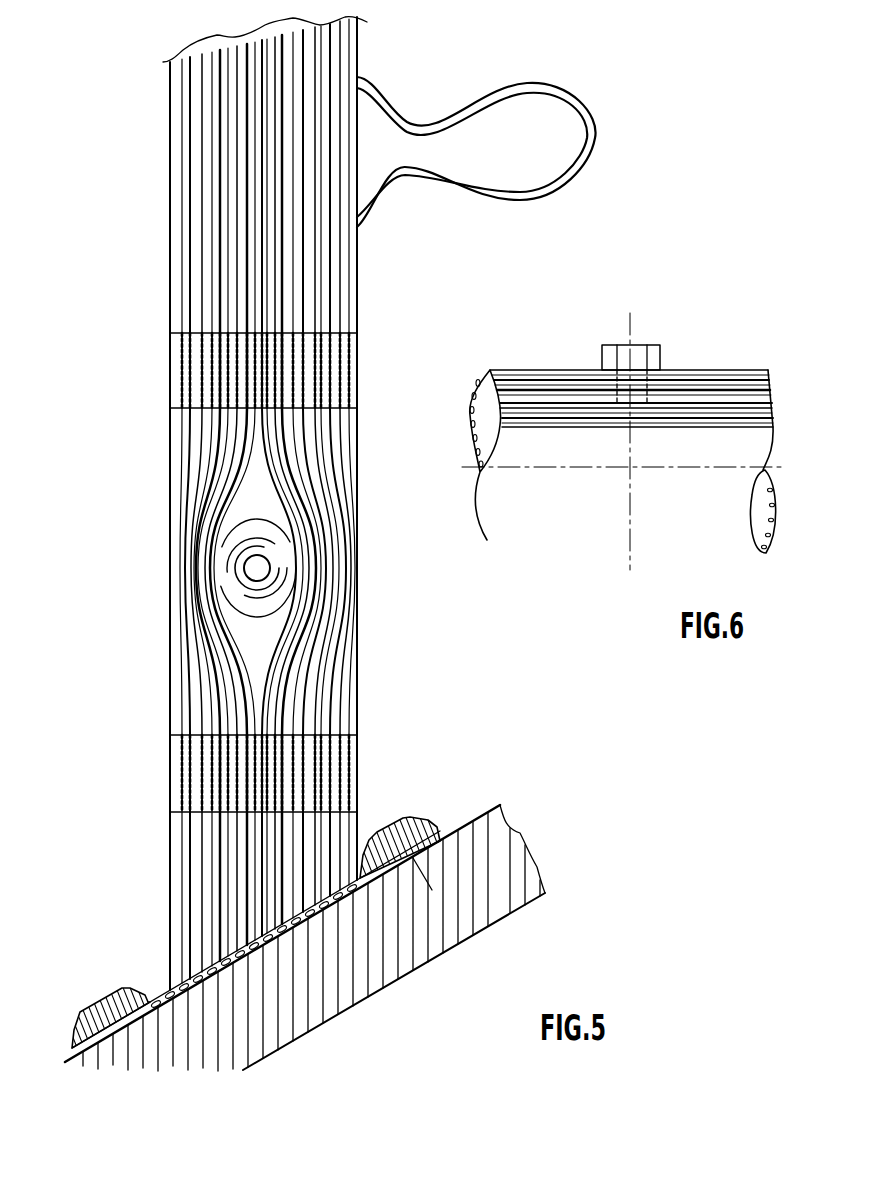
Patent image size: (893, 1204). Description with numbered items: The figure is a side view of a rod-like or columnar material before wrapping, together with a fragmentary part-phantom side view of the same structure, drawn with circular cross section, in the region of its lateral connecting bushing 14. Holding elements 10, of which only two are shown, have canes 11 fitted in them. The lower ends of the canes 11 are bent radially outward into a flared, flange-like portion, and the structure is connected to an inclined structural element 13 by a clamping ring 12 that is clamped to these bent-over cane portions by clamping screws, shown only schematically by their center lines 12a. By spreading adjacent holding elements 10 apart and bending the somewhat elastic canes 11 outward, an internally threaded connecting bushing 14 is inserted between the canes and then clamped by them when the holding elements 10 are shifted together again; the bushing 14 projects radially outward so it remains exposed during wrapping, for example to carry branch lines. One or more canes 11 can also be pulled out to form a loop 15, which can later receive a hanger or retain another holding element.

In FIG. 5, the holding element 10 is at (330, 372).
In FIG. 5, the cane 11 is at (190, 220).
In FIG. 6, the cane 11 is at (728, 405).
In FIG. 5, the clamping ring 12 is at (433, 823).
In FIG. 5, the clamping screw center line 12a is at (387, 812).
In FIG. 5, the inclined structural element 13 is at (492, 880).
In FIG. 5, the connecting bushing 14 is at (277, 567).
In FIG. 6, the connecting bushing 14 is at (625, 345).
In FIG. 5, the loop 15 is at (500, 96).